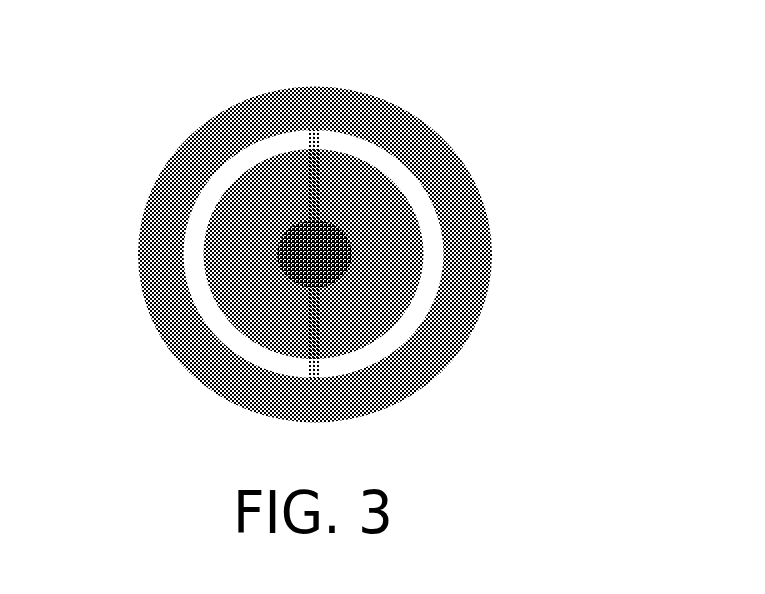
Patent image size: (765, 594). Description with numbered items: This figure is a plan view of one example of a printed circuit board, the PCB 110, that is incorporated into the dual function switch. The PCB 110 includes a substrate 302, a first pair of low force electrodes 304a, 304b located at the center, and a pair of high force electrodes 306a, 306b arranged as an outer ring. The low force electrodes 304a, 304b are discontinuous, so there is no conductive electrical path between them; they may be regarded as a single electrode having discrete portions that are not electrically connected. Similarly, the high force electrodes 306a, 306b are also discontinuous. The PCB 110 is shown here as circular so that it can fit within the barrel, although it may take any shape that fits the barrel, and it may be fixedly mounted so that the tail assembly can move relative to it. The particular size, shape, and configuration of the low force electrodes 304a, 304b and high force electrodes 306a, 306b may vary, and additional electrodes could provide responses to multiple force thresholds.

The PCB 110 is at (312, 215).
The substrate 302 is at (442, 165).
The low force electrode 304a is at (338, 243).
The low force electrode 304b is at (297, 243).
The high force electrode 306a is at (285, 142).
The high force electrode 306b is at (335, 141).